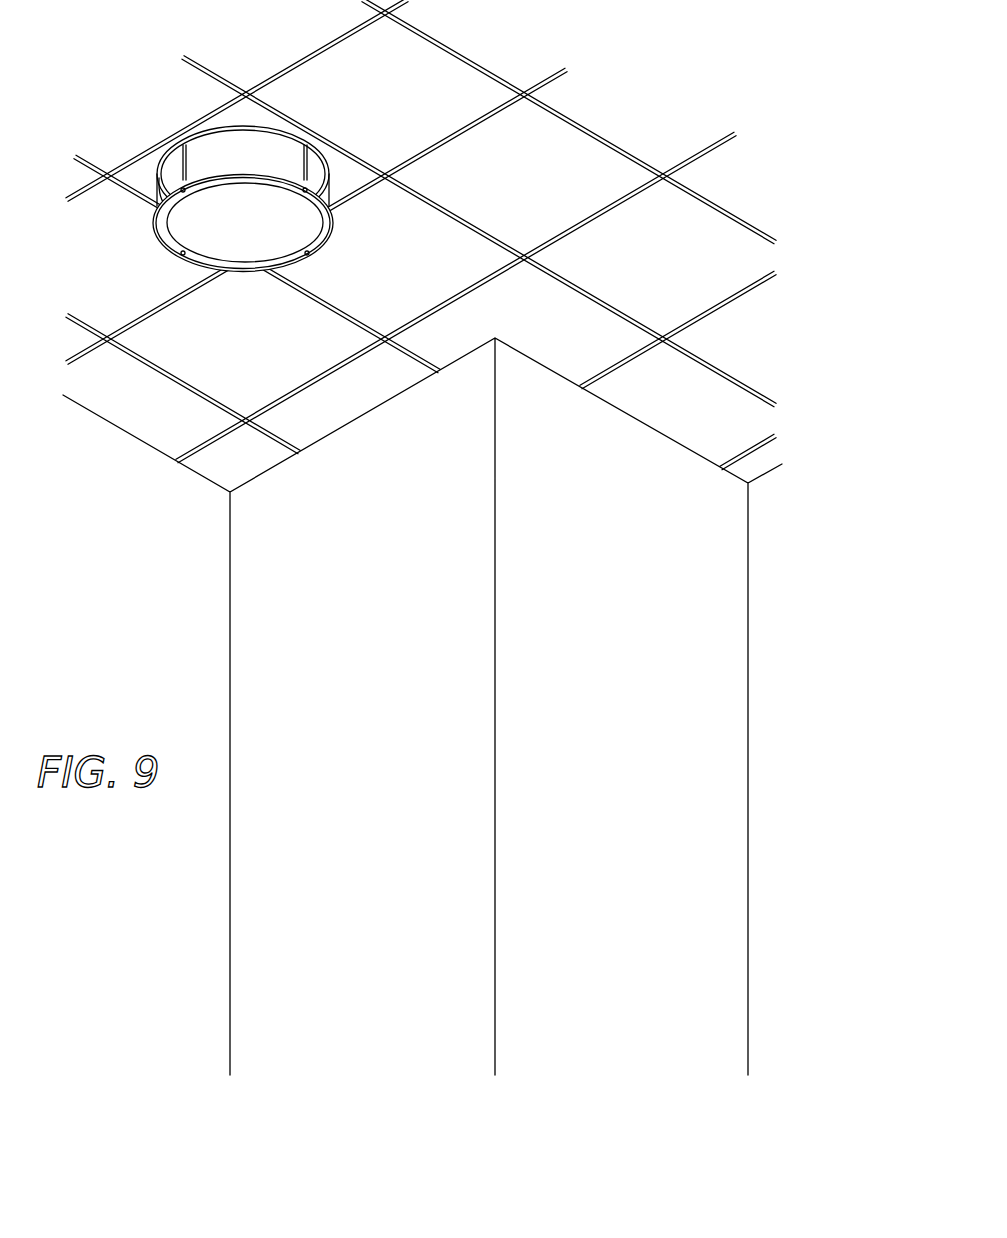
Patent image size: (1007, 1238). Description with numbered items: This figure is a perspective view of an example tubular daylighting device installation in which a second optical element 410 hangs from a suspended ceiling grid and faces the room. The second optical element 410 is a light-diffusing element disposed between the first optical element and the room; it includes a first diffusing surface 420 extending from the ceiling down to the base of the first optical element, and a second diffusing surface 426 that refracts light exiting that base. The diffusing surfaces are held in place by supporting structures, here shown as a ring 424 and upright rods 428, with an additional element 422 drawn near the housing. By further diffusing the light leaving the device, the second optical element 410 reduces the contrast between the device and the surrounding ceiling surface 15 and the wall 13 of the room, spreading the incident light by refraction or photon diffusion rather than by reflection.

The wall 13 is at (366, 590).
The ceiling surface 15 is at (643, 236).
The second optical element 410 is at (264, 194).
The first diffusing surface 420 is at (214, 152).
The housing side wall 422 is at (160, 176).
The ring 424 is at (167, 240).
The second diffusing surface 426 is at (226, 243).
The rod 428 is at (303, 162).